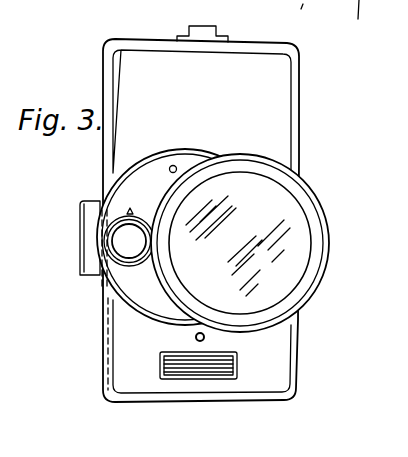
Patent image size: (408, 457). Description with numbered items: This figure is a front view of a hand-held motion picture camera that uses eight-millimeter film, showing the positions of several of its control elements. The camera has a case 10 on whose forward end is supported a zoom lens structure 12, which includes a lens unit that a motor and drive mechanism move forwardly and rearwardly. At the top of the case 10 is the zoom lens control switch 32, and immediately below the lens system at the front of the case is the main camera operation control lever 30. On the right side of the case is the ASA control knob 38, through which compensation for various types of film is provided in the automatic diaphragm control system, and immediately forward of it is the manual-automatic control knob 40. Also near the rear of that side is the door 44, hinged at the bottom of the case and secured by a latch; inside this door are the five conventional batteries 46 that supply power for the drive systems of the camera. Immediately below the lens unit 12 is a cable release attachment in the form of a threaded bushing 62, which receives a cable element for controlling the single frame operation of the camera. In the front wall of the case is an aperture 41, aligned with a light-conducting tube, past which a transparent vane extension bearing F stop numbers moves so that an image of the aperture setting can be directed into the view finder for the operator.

The case 10 is at (300, 110).
The zoom lens structure 12 is at (283, 207).
The main camera operation control lever 30 is at (239, 368).
The zoom lens control switch 32 is at (187, 26).
The ASA control knob 38 is at (90, 194).
The manual-automatic control knob 40 is at (110, 241).
The aperture 41 is at (175, 165).
The door 44 is at (371, 22).
The batteries 46 is at (284, 15).
The threaded bushing 62 is at (195, 337).